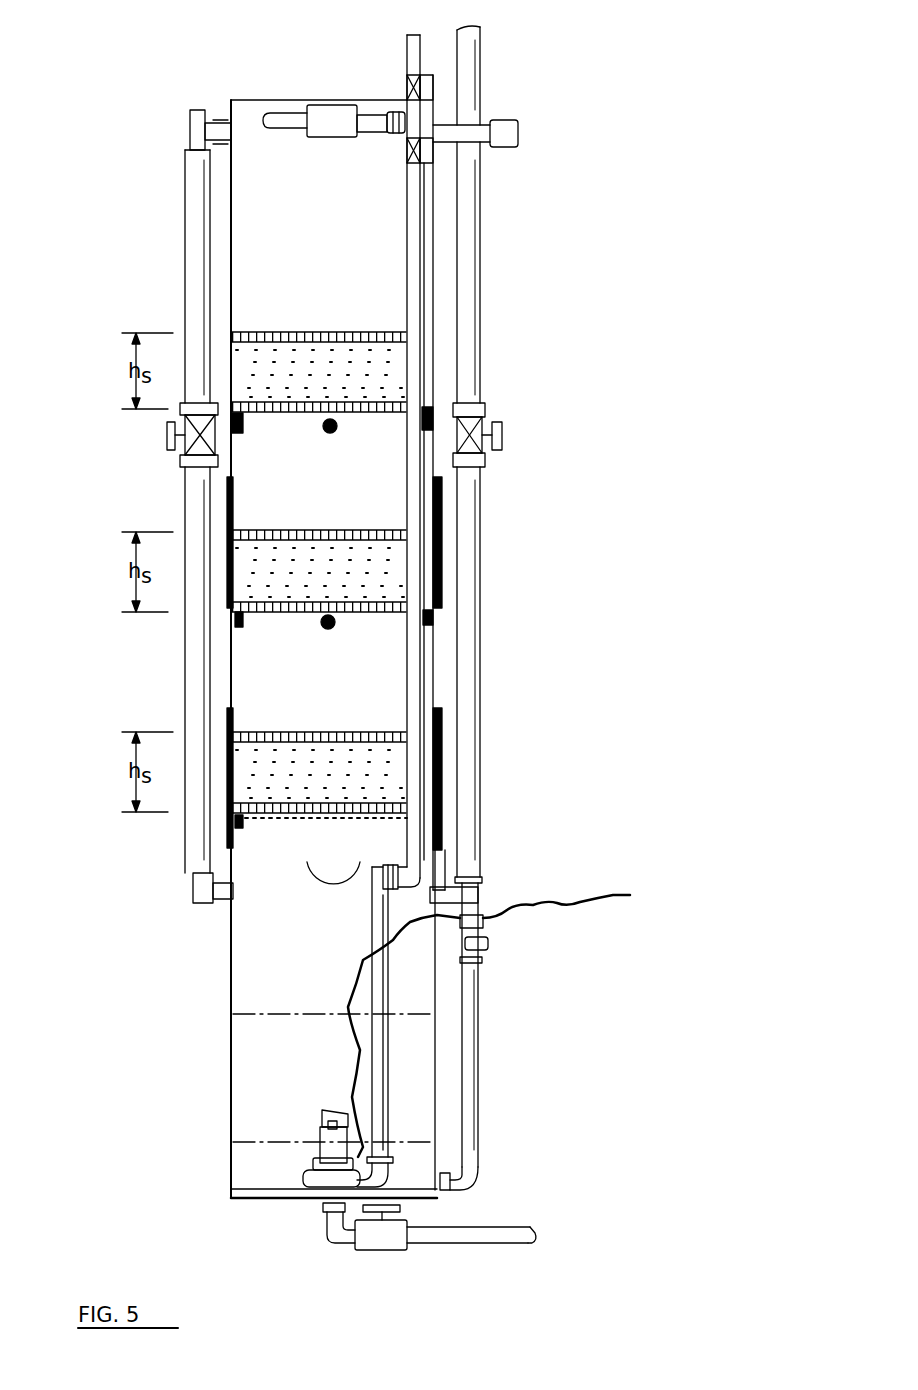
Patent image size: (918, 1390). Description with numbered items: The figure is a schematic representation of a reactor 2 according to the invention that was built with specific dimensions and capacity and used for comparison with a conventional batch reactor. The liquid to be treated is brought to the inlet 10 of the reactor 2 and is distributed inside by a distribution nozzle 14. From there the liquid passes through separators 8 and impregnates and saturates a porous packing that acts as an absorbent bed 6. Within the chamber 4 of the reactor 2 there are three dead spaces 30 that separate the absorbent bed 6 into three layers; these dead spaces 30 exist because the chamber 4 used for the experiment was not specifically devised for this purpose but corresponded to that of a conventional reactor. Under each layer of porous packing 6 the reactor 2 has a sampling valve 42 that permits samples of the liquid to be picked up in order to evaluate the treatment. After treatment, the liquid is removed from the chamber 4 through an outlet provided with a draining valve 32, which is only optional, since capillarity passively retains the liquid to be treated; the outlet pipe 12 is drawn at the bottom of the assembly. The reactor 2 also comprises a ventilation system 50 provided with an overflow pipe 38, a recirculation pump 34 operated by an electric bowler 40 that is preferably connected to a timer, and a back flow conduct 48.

The reactor 2 is at (130, 118).
The chamber 4 is at (433, 273).
The absorbent bed 6 is at (369, 372).
The separators 8 is at (377, 402).
The inlet 10 is at (416, 34).
The outlet pipe 12 is at (520, 1230).
The distribution nozzle 14 is at (335, 100).
The dead spaces 30 is at (370, 193).
The draining valve 32 is at (383, 1243).
The recirculation pump 34 is at (328, 1148).
The overflow pipe 38 is at (488, 943).
The electric bowler 40 is at (515, 903).
The sampling valve 42 is at (322, 430).
The back flow conduct 48 is at (420, 227).
The ventilation system 50 is at (185, 183).